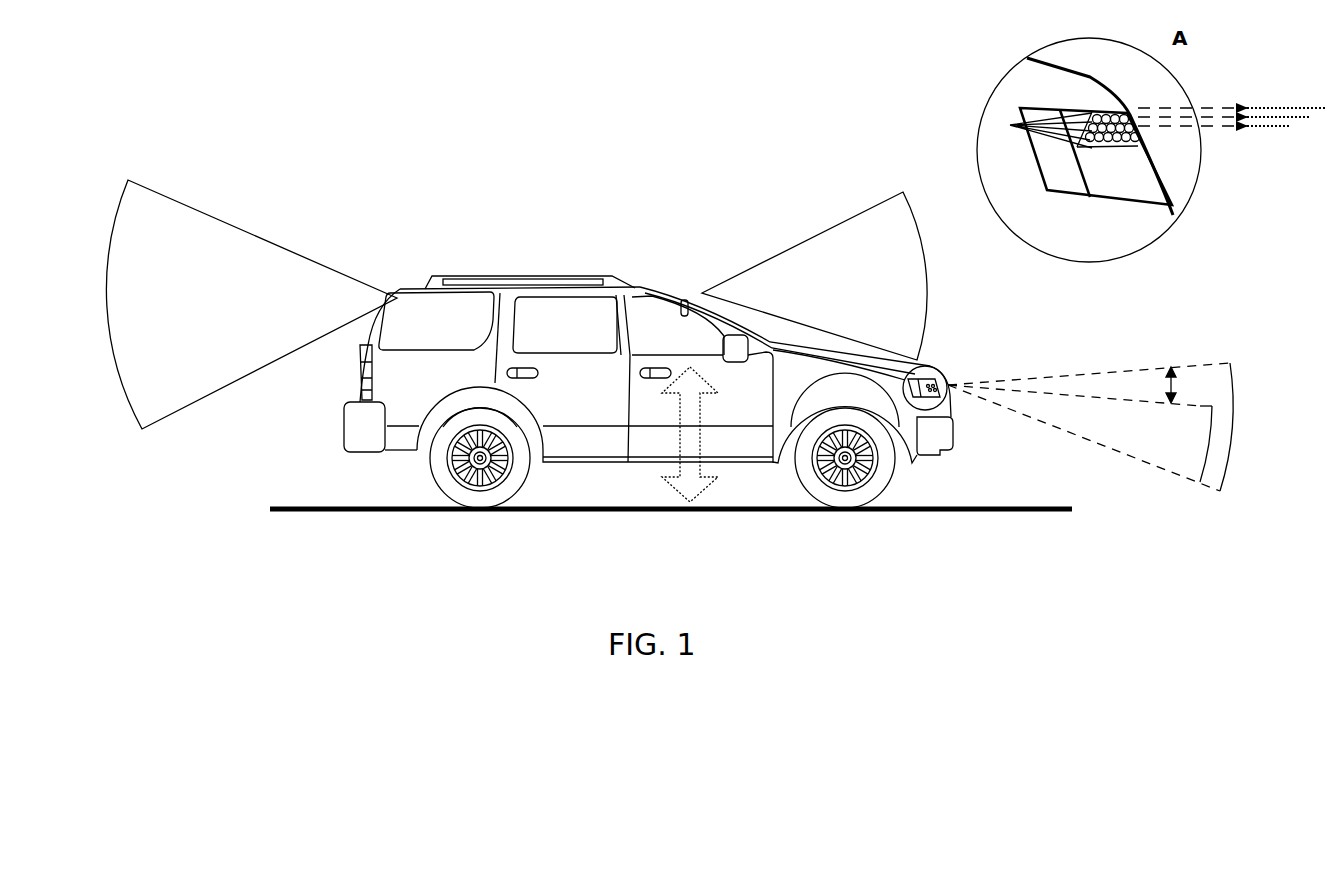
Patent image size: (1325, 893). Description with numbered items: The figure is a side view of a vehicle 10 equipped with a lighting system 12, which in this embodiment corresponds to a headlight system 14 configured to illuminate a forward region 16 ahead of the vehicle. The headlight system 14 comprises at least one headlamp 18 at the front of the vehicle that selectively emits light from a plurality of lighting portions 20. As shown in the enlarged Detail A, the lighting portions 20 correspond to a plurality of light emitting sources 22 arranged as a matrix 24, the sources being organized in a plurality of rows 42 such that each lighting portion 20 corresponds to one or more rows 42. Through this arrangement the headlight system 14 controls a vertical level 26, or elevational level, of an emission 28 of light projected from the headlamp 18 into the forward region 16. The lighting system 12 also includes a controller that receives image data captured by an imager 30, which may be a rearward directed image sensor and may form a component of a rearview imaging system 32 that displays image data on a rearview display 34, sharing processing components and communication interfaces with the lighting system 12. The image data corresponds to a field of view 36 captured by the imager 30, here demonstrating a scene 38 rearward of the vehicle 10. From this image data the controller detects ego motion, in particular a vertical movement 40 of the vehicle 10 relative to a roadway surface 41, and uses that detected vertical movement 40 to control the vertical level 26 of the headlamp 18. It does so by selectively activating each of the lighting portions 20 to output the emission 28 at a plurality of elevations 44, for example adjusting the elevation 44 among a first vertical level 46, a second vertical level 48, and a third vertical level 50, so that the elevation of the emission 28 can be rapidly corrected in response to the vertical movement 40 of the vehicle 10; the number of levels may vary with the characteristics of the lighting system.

The vehicle 10 is at (687, 326).
The lighting system 12 is at (717, 185).
The headlight system 14 is at (938, 320).
The forward region 16 is at (1310, 358).
The headlamp 18 is at (950, 393).
The lighting portions 20 is at (1024, 151).
The light emitting sources 22 is at (1024, 151).
The matrix 24 is at (1087, 103).
The vertical level 26 is at (1178, 388).
The emission 28 is at (1227, 453).
The imager 30 is at (398, 296).
The rearview imaging system 32 is at (706, 268).
The rearview display 34 is at (681, 300).
The field of view 36 is at (236, 226).
The scene 38 is at (40, 160).
The vertical movement 40 is at (663, 480).
The roadway surface 41 is at (1025, 508).
The rows 42 is at (1017, 127).
The elevations 44 is at (1231, 74).
The first vertical level 46 is at (1268, 126).
The second vertical level 48 is at (1292, 117).
The third vertical level 50 is at (1320, 108).